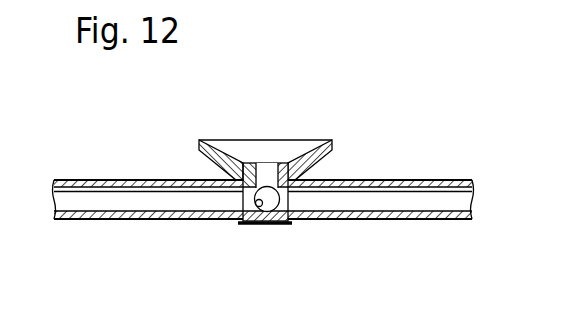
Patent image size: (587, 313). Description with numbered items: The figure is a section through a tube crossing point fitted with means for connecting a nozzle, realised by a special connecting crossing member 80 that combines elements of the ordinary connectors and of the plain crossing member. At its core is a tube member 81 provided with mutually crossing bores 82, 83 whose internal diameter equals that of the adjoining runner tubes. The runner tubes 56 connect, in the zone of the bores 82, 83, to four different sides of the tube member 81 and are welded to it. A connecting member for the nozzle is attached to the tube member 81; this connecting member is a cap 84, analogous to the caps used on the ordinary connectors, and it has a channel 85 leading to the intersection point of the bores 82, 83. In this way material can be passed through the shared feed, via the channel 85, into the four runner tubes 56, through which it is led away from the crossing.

The runner tube 56 is at (89, 220).
The connecting crossing member 80 is at (256, 182).
The tube member 81 is at (280, 226).
The bore 82 is at (255, 203).
The bore 83 is at (262, 226).
The cap 84 is at (332, 146).
The channel 85 is at (265, 177).